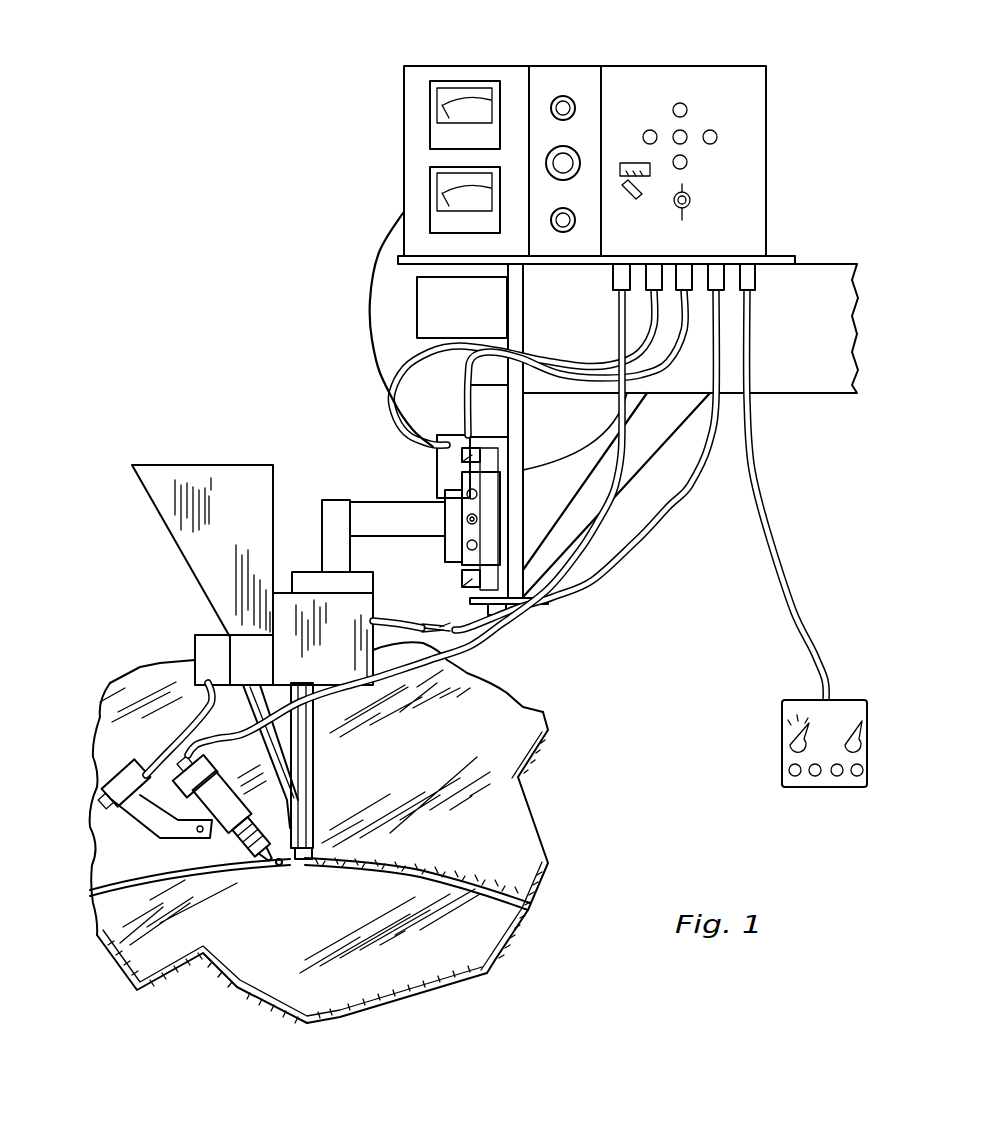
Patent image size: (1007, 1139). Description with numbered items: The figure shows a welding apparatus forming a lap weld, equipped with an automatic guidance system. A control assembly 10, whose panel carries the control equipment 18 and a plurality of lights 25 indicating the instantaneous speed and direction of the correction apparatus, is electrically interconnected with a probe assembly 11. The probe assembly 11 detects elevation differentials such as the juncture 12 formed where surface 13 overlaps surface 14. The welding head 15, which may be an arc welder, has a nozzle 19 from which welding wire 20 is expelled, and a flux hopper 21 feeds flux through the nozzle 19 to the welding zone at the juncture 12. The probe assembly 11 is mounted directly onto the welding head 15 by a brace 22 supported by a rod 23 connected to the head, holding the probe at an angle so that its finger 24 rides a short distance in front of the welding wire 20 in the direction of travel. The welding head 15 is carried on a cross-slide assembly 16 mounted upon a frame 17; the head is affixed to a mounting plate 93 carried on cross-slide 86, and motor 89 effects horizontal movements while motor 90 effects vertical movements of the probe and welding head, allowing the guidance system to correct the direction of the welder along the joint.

The control assembly 10 is at (787, 61).
The control equipment 18 is at (466, 53).
The lights 25 is at (710, 130).
The frame 17 is at (659, 453).
The motor 90 is at (498, 417).
The motor 89 is at (453, 428).
The cross-slide assembly 16 is at (423, 490).
The mounting plate 93 is at (458, 550).
The cross-slide 86 is at (463, 570).
The flux hopper 21 is at (218, 463).
The welding nozzle 19 is at (313, 803).
The welding wire 20 is at (302, 858).
The brace 22 is at (160, 833).
The rod 23 is at (167, 732).
The welding head 15 is at (375, 738).
The surface 13 is at (535, 860).
The surface 14 is at (497, 940).
The juncture 12 is at (530, 903).
The probe assembly 11 is at (213, 847).
The finger 24 is at (280, 864).